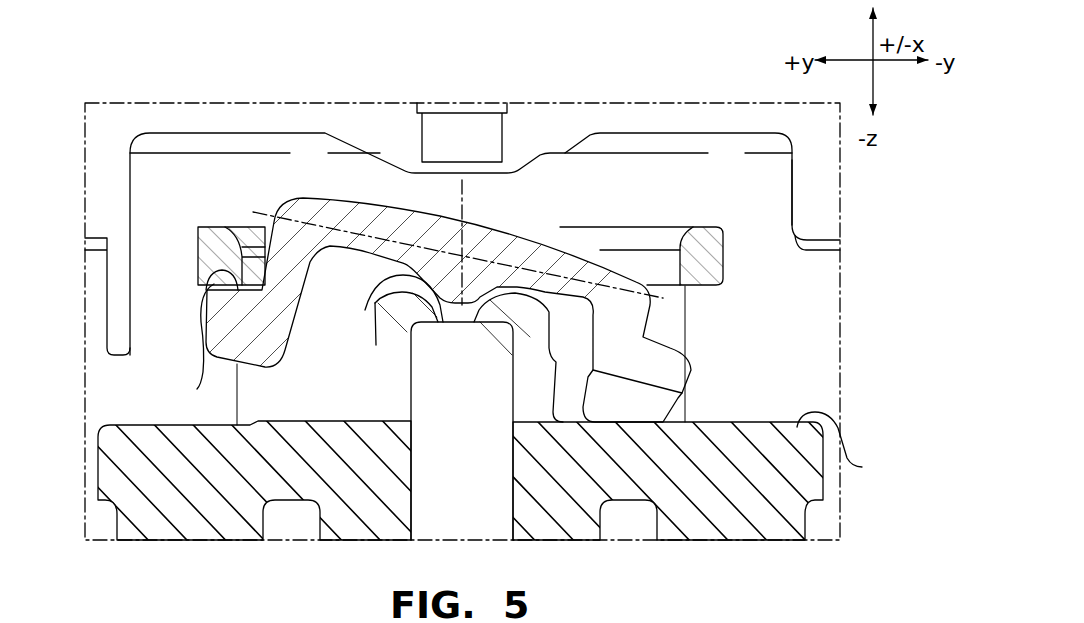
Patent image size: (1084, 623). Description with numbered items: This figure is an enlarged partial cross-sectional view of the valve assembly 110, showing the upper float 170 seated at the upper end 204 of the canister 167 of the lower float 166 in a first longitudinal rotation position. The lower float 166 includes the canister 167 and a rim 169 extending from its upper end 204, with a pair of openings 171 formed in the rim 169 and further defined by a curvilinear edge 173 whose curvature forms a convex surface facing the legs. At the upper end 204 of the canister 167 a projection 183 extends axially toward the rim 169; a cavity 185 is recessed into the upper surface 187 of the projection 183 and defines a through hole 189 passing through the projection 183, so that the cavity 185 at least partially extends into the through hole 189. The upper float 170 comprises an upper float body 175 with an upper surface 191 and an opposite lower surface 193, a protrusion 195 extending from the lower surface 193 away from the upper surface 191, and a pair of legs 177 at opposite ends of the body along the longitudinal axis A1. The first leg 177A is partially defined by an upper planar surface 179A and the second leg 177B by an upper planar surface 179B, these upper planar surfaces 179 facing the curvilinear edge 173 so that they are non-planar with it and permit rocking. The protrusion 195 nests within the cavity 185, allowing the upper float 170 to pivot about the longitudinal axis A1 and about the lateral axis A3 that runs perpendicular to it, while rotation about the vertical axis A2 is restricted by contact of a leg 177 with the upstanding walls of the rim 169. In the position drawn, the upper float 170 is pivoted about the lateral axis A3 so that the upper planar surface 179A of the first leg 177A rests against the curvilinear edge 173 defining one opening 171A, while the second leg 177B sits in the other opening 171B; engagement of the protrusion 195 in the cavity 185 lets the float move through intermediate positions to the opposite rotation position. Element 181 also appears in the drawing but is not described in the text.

The valve assembly 110 is at (858, 255).
The lower float 166 is at (105, 418).
The canister 167 is at (186, 518).
The rim 169 is at (700, 208).
The upper float 170 is at (312, 192).
The pair of openings 171 is at (477, 262).
The opening 171A is at (195, 364).
The opening 171B is at (752, 330).
The curvilinear edge 173 is at (195, 285).
The upper float body 175 is at (547, 254).
The pair of legs 177 is at (467, 453).
The first leg 177A is at (249, 470).
The second leg 177B is at (691, 407).
The upper planar surfaces 179 is at (488, 354).
The upper planar surface 179A is at (255, 376).
The upper planar surface 179B is at (662, 344).
The cover recess 181 is at (423, 141).
The projection 183 is at (556, 358).
The cavity 185 is at (468, 327).
The upper surface 187 is at (365, 310).
The through hole 189 is at (461, 327).
The upper surface 191 is at (618, 262).
The lower surface 193 is at (364, 254).
The protrusion 195 is at (446, 305).
The upper end 204 is at (851, 445).
The longitudinal axis A1 is at (262, 210).
The vertical axis A2 is at (466, 188).
The lateral axis A3 is at (457, 248).